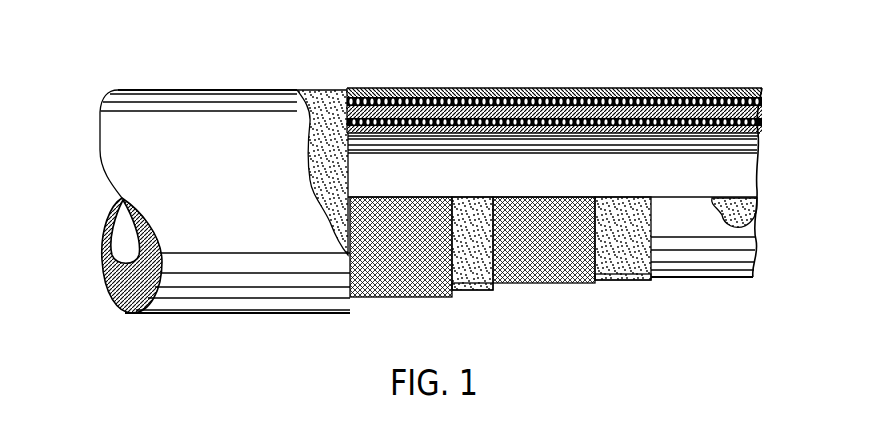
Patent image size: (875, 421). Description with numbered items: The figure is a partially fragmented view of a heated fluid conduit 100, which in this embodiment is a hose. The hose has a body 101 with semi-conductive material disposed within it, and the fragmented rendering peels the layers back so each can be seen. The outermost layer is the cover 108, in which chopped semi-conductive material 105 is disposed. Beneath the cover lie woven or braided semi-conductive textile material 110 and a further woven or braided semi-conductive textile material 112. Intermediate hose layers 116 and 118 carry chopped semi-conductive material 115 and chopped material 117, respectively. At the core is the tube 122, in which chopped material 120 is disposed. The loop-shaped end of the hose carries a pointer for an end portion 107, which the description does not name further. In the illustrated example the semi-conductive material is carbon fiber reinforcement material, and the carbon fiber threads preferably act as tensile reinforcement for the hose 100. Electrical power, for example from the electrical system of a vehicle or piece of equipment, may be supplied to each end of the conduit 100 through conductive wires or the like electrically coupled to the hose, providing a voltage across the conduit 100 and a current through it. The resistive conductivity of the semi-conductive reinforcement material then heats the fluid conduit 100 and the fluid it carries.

The heated fluid conduit 100 is at (150, 57).
The body 101 is at (343, 90).
The chopped material 105 is at (323, 100).
The loop end 107 is at (277, 323).
The cover 108 is at (218, 123).
The woven or braided semi-conductive textile material 110 is at (400, 297).
The woven or braided semi-conductive textile material 112 is at (538, 285).
The chopped material 115 is at (485, 204).
The intermediate hose layer 116 is at (762, 107).
The chopped material 117 is at (677, 92).
The intermediate hose layer 118 is at (760, 127).
The chopped material 120 is at (755, 206).
The tube 122 is at (730, 137).